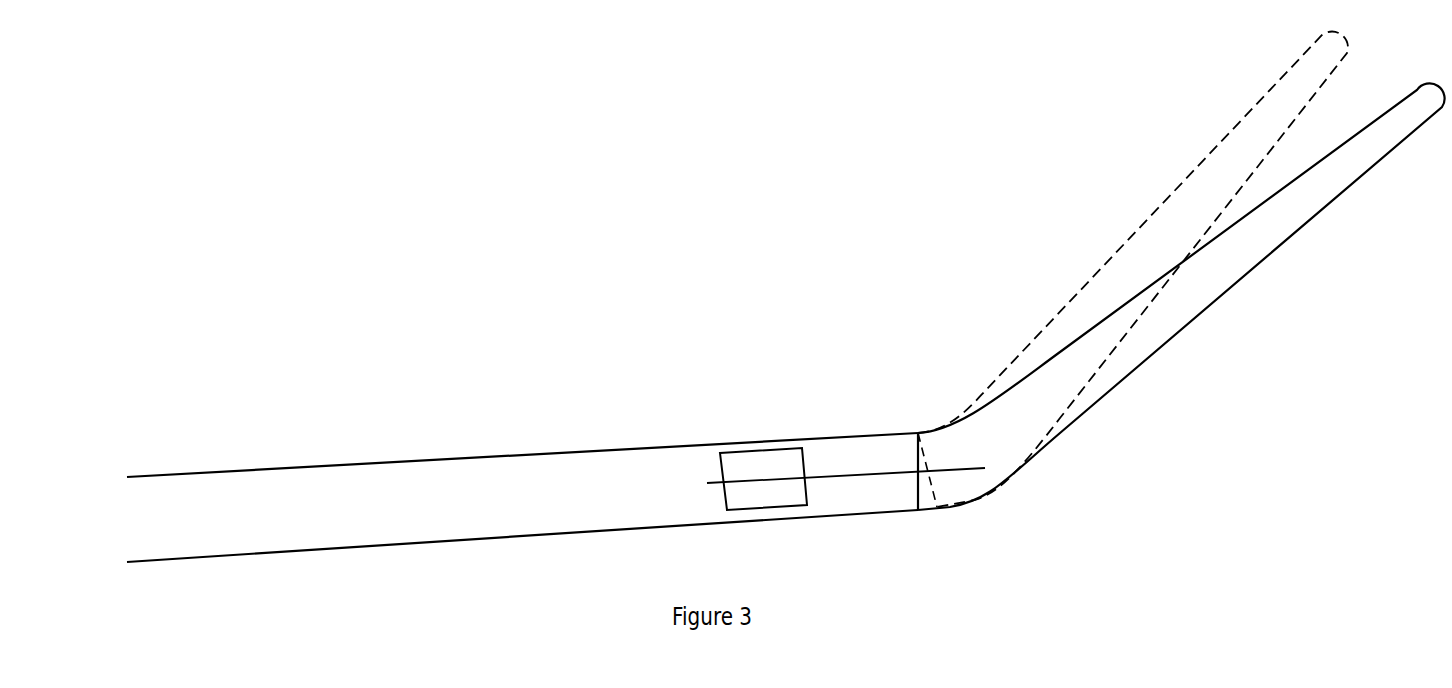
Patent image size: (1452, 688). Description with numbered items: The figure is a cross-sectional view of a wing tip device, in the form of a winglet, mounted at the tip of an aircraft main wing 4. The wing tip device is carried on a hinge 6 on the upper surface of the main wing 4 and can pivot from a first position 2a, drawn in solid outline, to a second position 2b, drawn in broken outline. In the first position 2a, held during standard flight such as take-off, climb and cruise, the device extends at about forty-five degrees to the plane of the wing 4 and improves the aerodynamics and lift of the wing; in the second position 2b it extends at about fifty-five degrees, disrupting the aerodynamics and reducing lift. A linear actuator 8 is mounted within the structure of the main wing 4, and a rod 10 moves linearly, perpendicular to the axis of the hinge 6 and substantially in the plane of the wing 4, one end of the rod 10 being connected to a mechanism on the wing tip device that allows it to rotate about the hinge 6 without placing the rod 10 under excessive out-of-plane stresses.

The first position 2a is at (1282, 218).
The second position 2b is at (1208, 181).
The aircraft wing 4 is at (383, 498).
The hinge 6 is at (913, 423).
The linear actuator 8 is at (748, 460).
The rod 10 is at (862, 480).